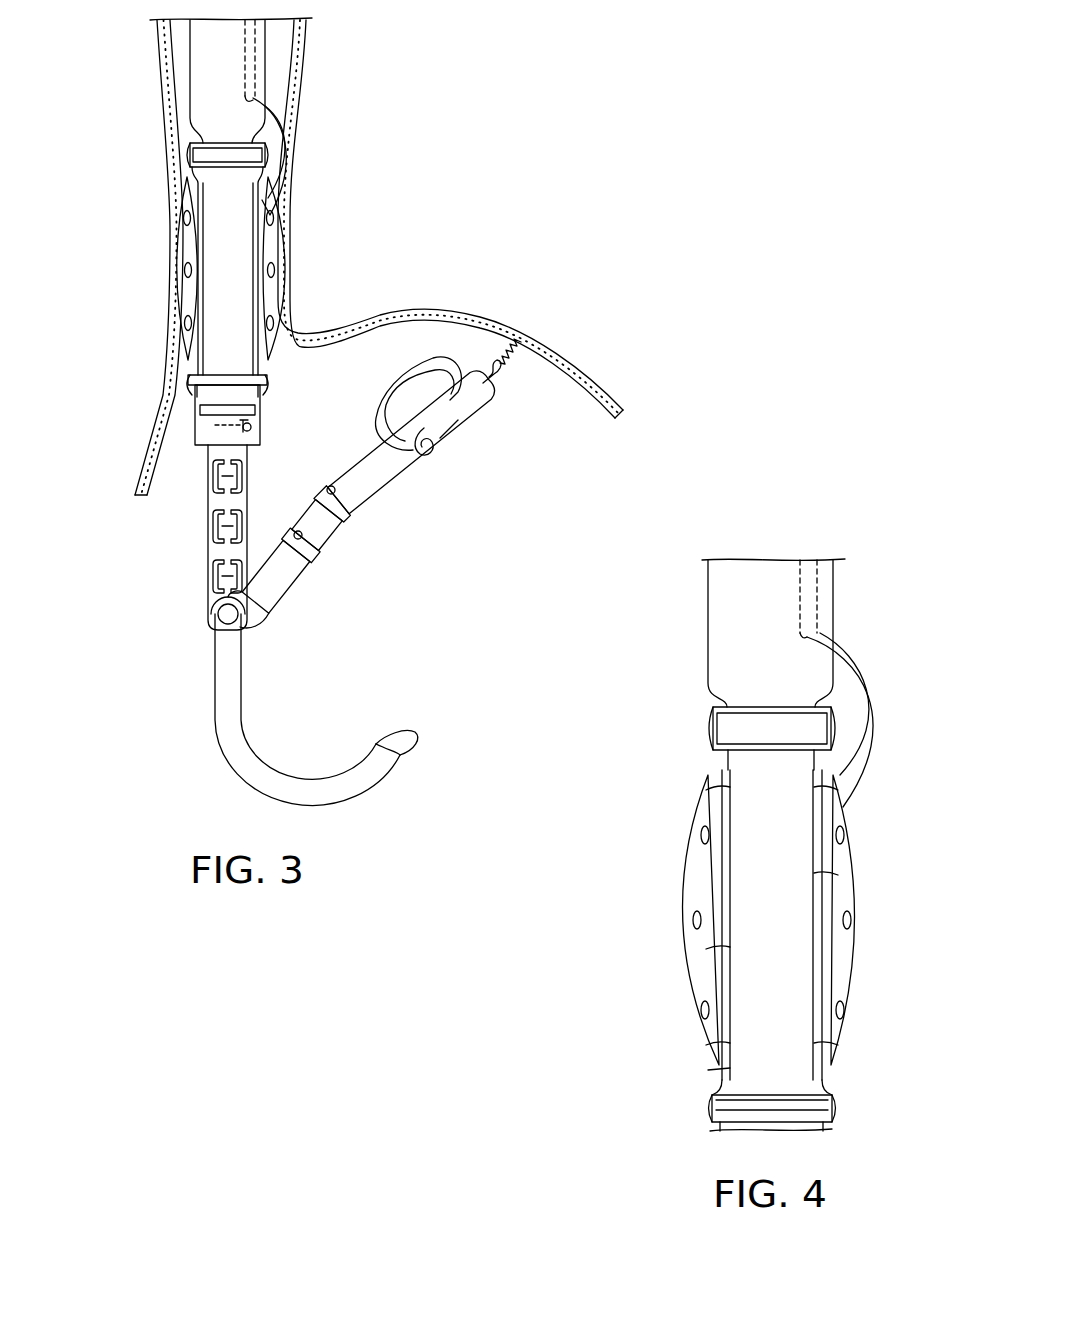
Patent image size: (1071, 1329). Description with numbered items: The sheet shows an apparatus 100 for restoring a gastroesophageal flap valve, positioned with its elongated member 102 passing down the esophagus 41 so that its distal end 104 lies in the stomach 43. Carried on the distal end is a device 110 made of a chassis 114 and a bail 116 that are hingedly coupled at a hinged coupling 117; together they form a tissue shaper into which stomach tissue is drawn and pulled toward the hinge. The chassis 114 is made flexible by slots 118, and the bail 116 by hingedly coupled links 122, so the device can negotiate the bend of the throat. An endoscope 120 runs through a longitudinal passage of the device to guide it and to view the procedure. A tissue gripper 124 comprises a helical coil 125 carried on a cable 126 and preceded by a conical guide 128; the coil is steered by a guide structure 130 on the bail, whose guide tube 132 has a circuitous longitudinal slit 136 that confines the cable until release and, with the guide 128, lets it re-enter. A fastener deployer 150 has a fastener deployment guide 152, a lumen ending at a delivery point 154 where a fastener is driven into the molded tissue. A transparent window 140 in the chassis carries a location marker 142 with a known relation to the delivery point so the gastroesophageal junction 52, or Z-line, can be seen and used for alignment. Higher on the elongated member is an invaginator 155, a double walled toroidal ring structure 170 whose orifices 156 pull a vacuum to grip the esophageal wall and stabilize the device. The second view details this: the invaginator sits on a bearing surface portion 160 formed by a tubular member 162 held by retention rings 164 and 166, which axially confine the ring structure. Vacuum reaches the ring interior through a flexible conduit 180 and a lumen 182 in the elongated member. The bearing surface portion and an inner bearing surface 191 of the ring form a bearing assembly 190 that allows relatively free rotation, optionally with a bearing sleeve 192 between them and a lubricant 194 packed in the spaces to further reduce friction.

In FIG. 3, the apparatus 100 is at (115, 640).
In FIG. 3, the esophagus 41 is at (309, 72).
In FIG. 3, the stomach 43 is at (571, 342).
In FIG. 3, the elongated member 102 is at (186, 96).
In FIG. 4, the elongated member 102 is at (769, 683).
In FIG. 3, the distal end 104 is at (270, 371).
In FIG. 3, the device 110 is at (197, 486).
In FIG. 3, the chassis 114 is at (206, 537).
In FIG. 3, the bail 116 is at (416, 492).
In FIG. 3, the hinged coupling 117 is at (242, 622).
In FIG. 3, the slots 118 is at (215, 577).
In FIG. 3, the endoscope 120 is at (228, 742).
In FIG. 3, the hingedly coupled links 122 is at (370, 480).
In FIG. 3, the tissue gripper 124 is at (529, 364).
In FIG. 3, the helical coil 125 is at (510, 351).
In FIG. 3, the cable 126 is at (441, 363).
In FIG. 3, the guide 128 is at (499, 368).
In FIG. 3, the guide structure 130 is at (488, 413).
In FIG. 3, the guide tube 132 is at (453, 426).
In FIG. 3, the longitudinal slit 136 is at (425, 456).
In FIG. 3, the window 140 is at (200, 392).
In FIG. 3, the location marker 142 is at (203, 410).
In FIG. 3, the fastener deployer 150 is at (217, 427).
In FIG. 3, the fastener deployment guide 152 is at (222, 428).
In FIG. 3, the delivery point 154 is at (252, 428).
In FIG. 3, the invaginator 155 is at (204, 265).
In FIG. 4, the invaginator 155 is at (753, 934).
In FIG. 3, the orifices 156 is at (183, 270).
In FIG. 4, the orifices 156 is at (846, 836).
In FIG. 3, the gastroesophageal junction 52 is at (168, 290).
In FIG. 4, the bearing surface portion 160 is at (740, 770).
In FIG. 4, the tubular member 162 is at (712, 789).
In FIG. 4, the retention ring 164 is at (730, 728).
In FIG. 4, the retention ring 166 is at (822, 1103).
In FIG. 4, the toroidal ring structure 170 is at (697, 982).
In FIG. 4, the flexible conduit 180 is at (862, 673).
In FIG. 4, the lumen 182 is at (812, 598).
In FIG. 4, the bearing assembly 190 is at (753, 938).
In FIG. 4, the inner bearing surface 191 is at (824, 873).
In FIG. 4, the bearing sleeve 192 is at (716, 1069).
In FIG. 4, the lubricant 194 is at (720, 1043).